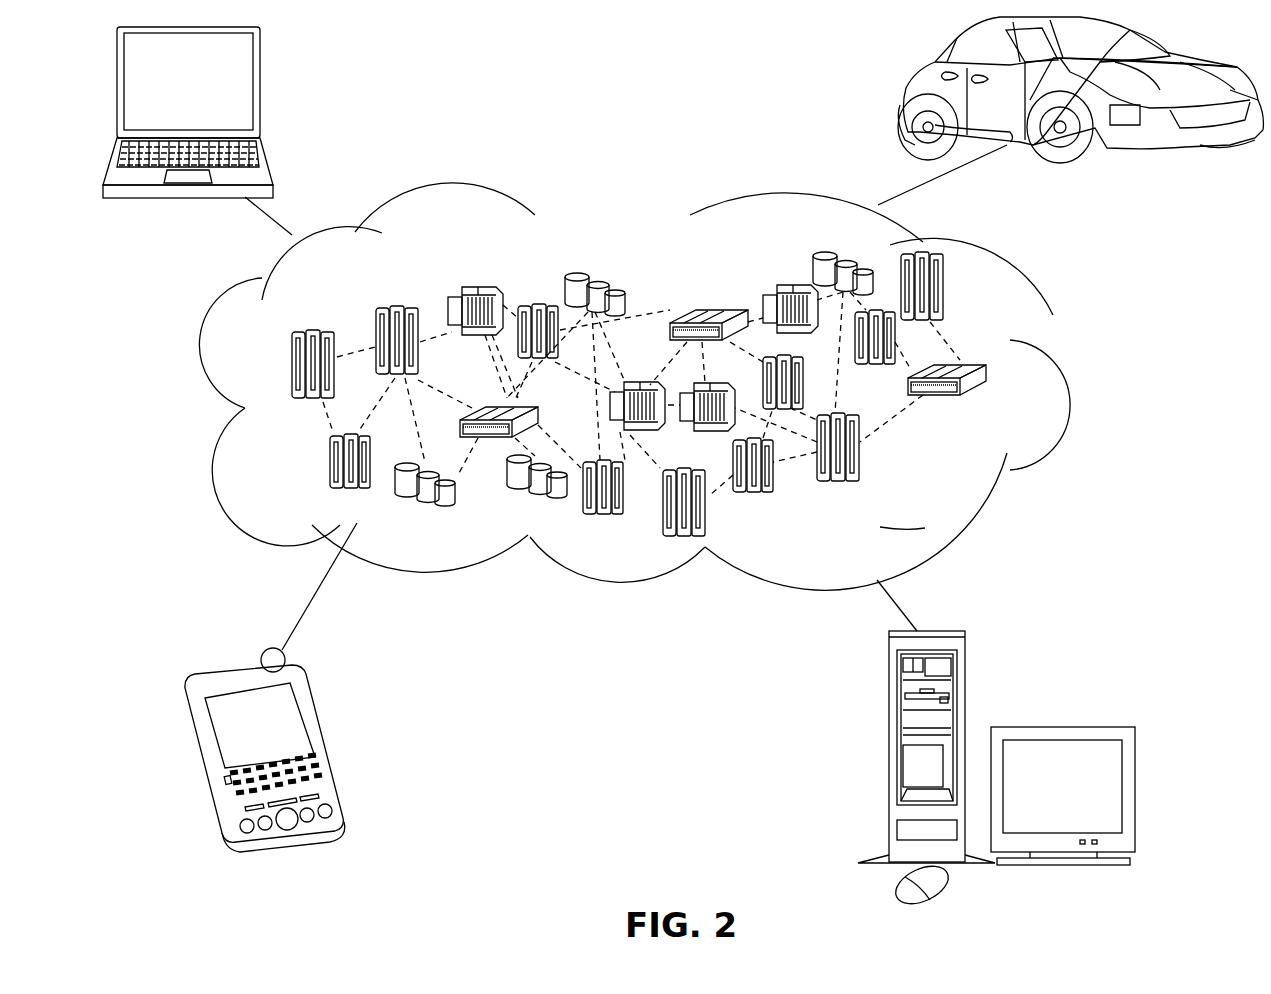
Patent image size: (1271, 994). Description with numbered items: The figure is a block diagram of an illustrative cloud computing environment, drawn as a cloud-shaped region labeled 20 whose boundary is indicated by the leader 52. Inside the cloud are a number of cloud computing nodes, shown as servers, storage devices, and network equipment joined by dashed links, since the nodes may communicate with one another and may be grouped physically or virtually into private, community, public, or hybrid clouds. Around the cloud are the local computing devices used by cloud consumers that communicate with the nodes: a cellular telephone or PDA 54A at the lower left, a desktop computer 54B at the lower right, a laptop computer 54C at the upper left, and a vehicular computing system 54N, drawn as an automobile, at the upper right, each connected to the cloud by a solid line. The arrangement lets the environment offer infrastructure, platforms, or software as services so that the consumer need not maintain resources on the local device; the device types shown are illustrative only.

The cloud computing environment 20 is at (972, 480).
The cloud computing nodes network 52 is at (1063, 377).
The cellular telephone or PDA 54A is at (316, 708).
The desktop computer 54B is at (889, 690).
The laptop computer 54C is at (260, 66).
The vehicular computing system 54N is at (905, 85).